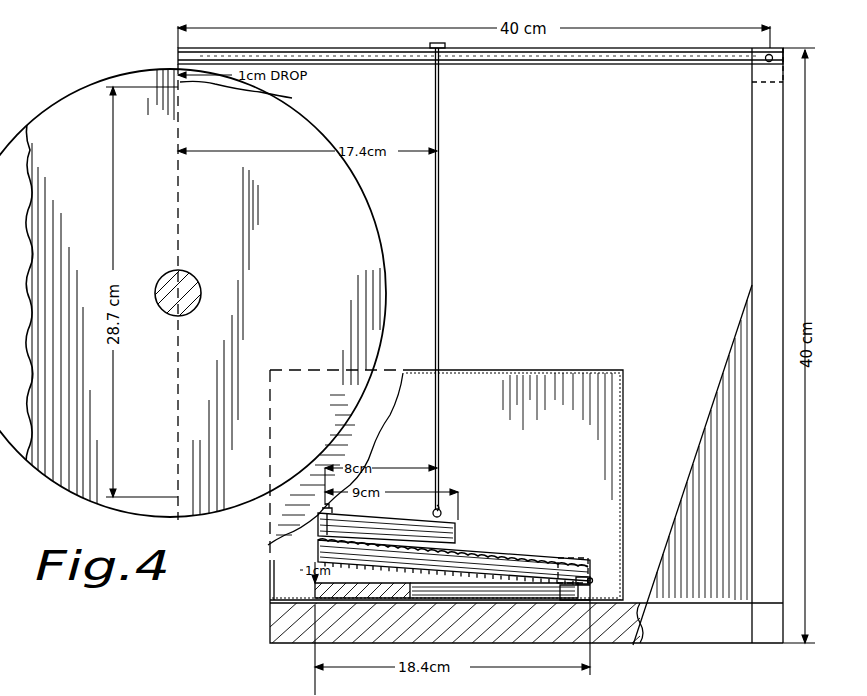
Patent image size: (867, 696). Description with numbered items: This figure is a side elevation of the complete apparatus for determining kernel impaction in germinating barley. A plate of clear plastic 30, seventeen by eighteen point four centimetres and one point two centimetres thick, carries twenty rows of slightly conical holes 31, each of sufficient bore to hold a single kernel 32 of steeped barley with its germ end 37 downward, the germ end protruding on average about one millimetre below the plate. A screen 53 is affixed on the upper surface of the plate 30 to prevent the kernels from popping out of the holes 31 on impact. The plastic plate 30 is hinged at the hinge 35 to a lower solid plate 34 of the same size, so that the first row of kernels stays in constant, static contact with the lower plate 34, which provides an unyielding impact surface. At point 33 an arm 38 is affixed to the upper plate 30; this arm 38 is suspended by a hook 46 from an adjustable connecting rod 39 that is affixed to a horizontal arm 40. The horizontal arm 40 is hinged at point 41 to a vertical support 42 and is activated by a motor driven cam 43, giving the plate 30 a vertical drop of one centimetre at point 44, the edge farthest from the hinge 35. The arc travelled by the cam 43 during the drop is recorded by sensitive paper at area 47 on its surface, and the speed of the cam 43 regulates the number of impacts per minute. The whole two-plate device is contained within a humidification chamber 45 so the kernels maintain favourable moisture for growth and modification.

The plate of clear plastic 30 is at (318, 550).
The slightly conical holes 31 is at (600, 563).
The kernel 32 is at (566, 559).
The point 33 is at (318, 512).
The lower solid plate 34 is at (640, 614).
The hinge 35 is at (594, 580).
The germ end 37 is at (580, 600).
The arm 38 is at (458, 529).
The adjustable connecting rod 39 is at (440, 208).
The horizontal arm 40 is at (602, 65).
The hinge point 41 is at (766, 61).
The vertical support 42 is at (752, 190).
The motor driven cam 43 is at (372, 264).
The point 44 is at (322, 566).
The humidification chamber 45 is at (623, 424).
The hook 46 is at (443, 512).
The area 47 is at (280, 97).
The screen 53 is at (466, 550).